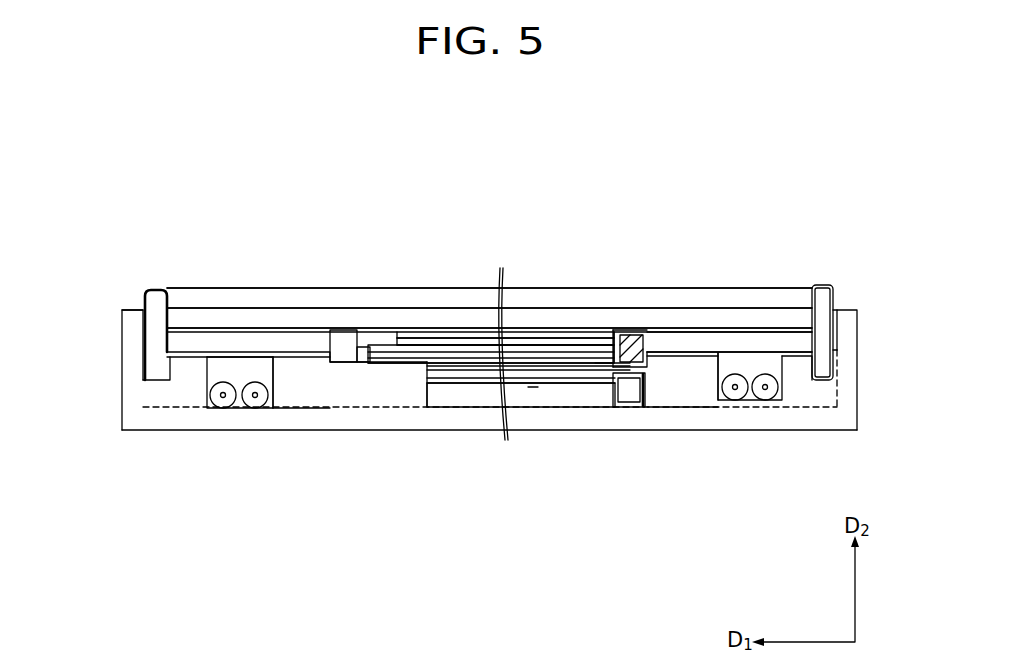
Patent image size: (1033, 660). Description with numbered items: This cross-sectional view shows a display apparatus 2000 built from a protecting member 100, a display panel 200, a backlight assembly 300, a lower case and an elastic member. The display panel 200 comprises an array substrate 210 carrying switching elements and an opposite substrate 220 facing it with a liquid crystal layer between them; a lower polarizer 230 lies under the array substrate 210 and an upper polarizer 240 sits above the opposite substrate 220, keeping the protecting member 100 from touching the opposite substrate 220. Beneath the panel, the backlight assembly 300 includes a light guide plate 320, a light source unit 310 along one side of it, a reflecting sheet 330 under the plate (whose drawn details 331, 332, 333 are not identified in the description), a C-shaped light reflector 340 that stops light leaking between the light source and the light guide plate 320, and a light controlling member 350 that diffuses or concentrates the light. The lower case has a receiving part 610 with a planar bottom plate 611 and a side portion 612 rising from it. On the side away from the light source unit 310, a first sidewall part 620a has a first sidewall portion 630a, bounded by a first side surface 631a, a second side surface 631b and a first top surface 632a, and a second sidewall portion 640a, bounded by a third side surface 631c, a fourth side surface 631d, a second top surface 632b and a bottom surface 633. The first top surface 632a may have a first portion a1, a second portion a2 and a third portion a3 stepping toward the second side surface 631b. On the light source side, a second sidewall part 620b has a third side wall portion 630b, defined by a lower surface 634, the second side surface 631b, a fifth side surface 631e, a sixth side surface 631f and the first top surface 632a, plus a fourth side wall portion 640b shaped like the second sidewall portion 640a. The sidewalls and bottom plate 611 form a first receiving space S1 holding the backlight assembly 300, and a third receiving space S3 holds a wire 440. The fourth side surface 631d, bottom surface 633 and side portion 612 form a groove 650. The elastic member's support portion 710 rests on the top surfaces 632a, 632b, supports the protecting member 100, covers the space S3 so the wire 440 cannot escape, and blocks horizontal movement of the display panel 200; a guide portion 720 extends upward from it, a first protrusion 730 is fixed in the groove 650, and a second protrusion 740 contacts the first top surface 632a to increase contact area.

The display apparatus 2000 is at (480, 126).
The protecting member 100 is at (558, 358).
The display panel 200 is at (491, 264).
The array substrate 210 is at (453, 340).
The opposite substrate 220 is at (492, 335).
The lower polarizer 230 is at (565, 345).
The upper polarizer 240 is at (548, 335).
The backlight assembly 300 is at (547, 459).
The light source unit 310 is at (600, 400).
The light guide plate 320 is at (487, 405).
The reflecting sheet 330 is at (632, 448).
The first support part 331 is at (630, 403).
The second support part 332 is at (618, 397).
The third support part 333 is at (667, 432).
The light reflector 340 is at (477, 390).
The light controlling member 350 is at (427, 396).
The wire 440 is at (752, 405).
The receiving part 610 is at (470, 422).
The bottom plate 611 is at (138, 423).
The side portion 612 is at (128, 393).
The first sidewall part 620a is at (265, 461).
The second sidewall part 620b is at (734, 459).
The first sidewall portion 630a is at (307, 395).
The third side wall portion 630b is at (695, 393).
The first side surface 631a is at (427, 362).
The second side surface 631b is at (278, 357).
The third side surface 631c is at (243, 373).
The fourth side surface 631d is at (160, 372).
The fifth side surface 631e is at (700, 352).
The sixth side surface 631f is at (595, 345).
The first top surface 632a is at (489, 239).
The second top surface 632b is at (182, 352).
The bottom surface 633 is at (122, 312).
The lower surface 634 is at (627, 337).
The second sidewall portion 640a is at (202, 397).
The fourth side wall portion 640b is at (785, 395).
The groove 650 is at (150, 375).
The support portion 710 is at (765, 345).
The guide portion 720 is at (822, 287).
The first protrusion 730 is at (845, 330).
The second protrusion 740 is at (628, 334).
The first portion a1 is at (373, 288).
The second portion a2 is at (338, 308).
The third portion a3 is at (310, 330).
The first receiving space S1 is at (533, 387).
The third receiving space S3 is at (240, 350).